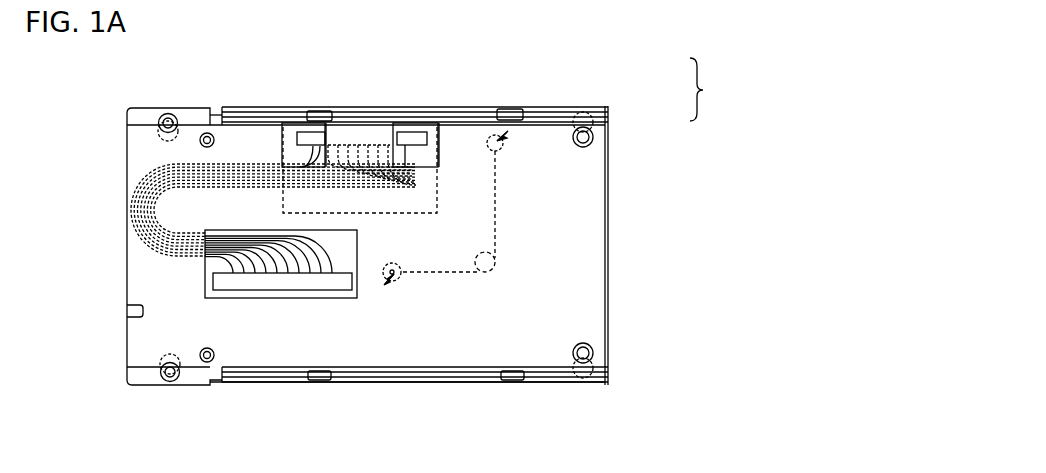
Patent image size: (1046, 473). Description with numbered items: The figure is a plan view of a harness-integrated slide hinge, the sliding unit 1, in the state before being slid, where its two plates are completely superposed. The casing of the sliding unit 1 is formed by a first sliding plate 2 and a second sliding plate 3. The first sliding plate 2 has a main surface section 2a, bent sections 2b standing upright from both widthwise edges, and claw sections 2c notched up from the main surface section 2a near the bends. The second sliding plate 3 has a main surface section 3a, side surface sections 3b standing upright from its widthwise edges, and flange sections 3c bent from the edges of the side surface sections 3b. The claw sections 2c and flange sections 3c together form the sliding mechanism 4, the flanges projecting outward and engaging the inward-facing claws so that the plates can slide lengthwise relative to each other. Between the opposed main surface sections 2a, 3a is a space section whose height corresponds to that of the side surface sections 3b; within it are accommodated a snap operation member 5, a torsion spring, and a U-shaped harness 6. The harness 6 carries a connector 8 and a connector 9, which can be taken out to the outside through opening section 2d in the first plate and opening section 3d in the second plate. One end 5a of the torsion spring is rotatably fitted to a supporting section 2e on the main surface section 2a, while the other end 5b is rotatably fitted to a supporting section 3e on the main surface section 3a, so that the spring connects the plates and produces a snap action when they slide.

The sliding unit 1 is at (733, 139).
The first sliding plate 2 is at (185, 108).
The main surface section 2a is at (150, 152).
The bent sections 2b is at (403, 106).
The claw sections 2c is at (321, 111).
The opening section 2d is at (437, 188).
The supporting section 2e is at (487, 135).
The second sliding plate 3 is at (607, 307).
The main surface section 3a is at (587, 263).
The side surface sections 3b is at (597, 124).
The flange sections 3c is at (595, 121).
The opening section 3d is at (212, 278).
The supporting section 3e is at (396, 285).
The sliding mechanism 4 is at (705, 89).
The snap operation member 5 is at (495, 207).
The one end of the torsion spring 5a is at (507, 128).
The other end of the torsion spring 5b is at (389, 285).
The harness 6 is at (243, 165).
The connector 8 is at (368, 138).
The connector 9 is at (283, 292).